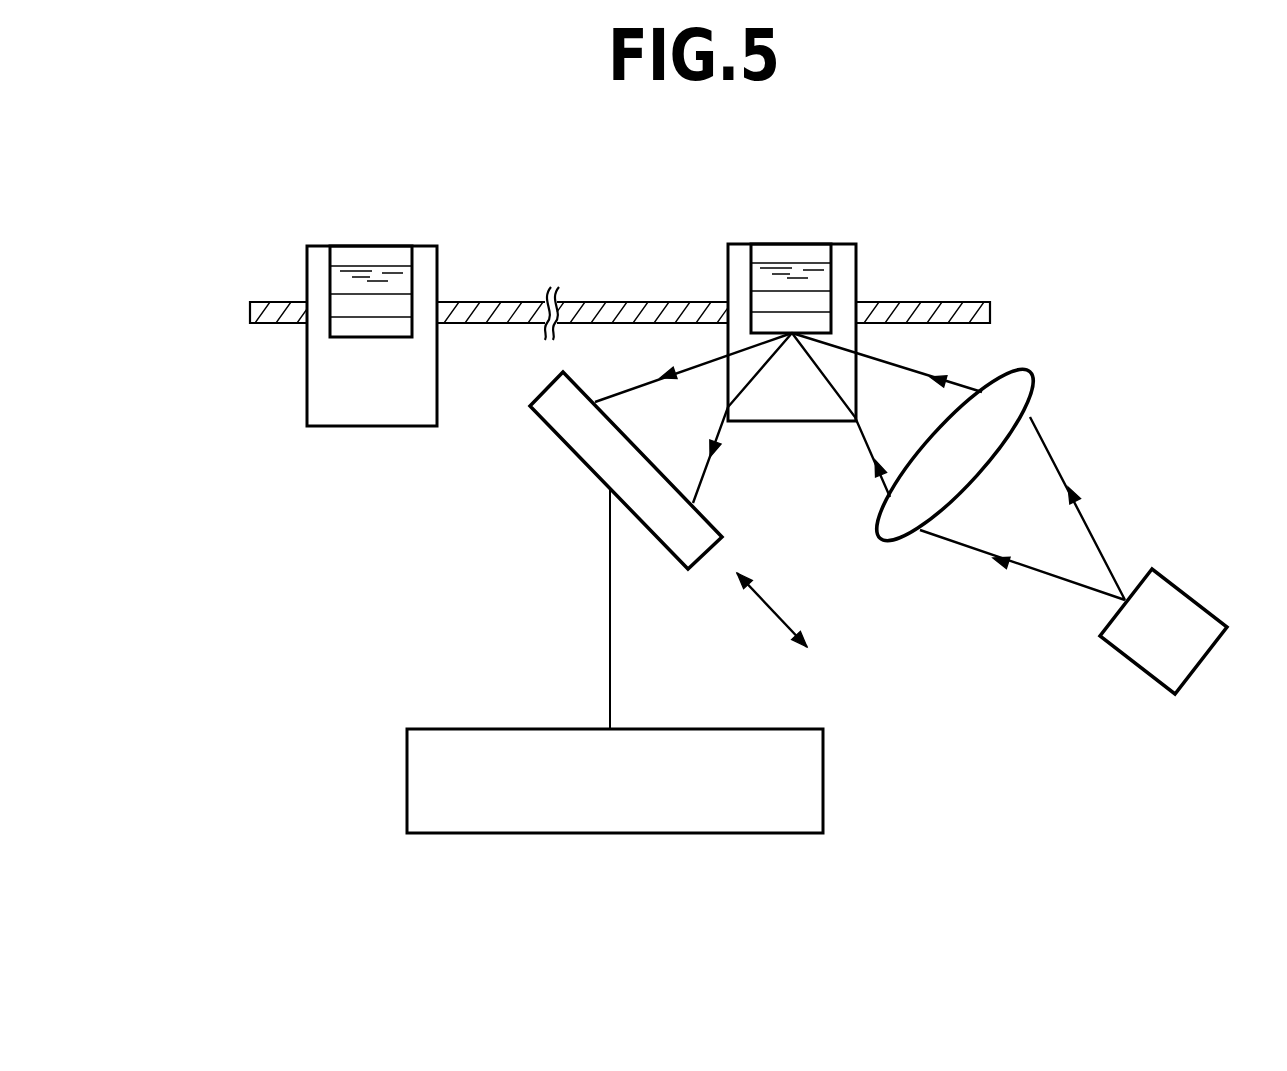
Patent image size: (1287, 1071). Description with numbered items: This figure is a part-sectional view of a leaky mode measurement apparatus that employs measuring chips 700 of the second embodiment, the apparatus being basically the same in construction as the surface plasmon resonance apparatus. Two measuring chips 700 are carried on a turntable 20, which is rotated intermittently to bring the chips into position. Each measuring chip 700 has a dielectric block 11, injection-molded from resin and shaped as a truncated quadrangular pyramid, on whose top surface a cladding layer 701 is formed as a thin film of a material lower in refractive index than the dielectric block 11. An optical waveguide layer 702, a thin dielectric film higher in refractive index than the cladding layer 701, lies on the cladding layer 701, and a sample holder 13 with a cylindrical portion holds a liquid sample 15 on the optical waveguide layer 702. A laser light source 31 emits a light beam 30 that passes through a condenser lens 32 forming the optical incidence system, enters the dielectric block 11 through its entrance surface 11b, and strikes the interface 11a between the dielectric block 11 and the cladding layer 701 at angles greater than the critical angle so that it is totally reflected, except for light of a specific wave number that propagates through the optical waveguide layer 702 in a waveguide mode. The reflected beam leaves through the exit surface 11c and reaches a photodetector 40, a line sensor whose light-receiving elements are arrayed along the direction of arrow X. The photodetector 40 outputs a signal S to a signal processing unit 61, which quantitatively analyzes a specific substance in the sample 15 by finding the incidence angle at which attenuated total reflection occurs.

The measuring chip 700 is at (358, 226).
The sample holder 13 is at (309, 246).
The liquid sample 15 is at (388, 267).
The optical waveguide layer 702 is at (348, 302).
The cladding layer 701 is at (348, 328).
The dielectric block 11 is at (335, 404).
The interface 11a is at (770, 333).
The entrance surface 11b is at (857, 397).
The exit surface 11c is at (725, 385).
The turntable 20 is at (468, 302).
The light beam 30 is at (1085, 515).
The laser light source 31 is at (1175, 598).
The condenser lens 32 is at (1028, 398).
The photodetector 40 is at (576, 456).
The signal processing unit 61 is at (830, 785).
The signal S is at (610, 642).
The arrow X direction X is at (772, 610).